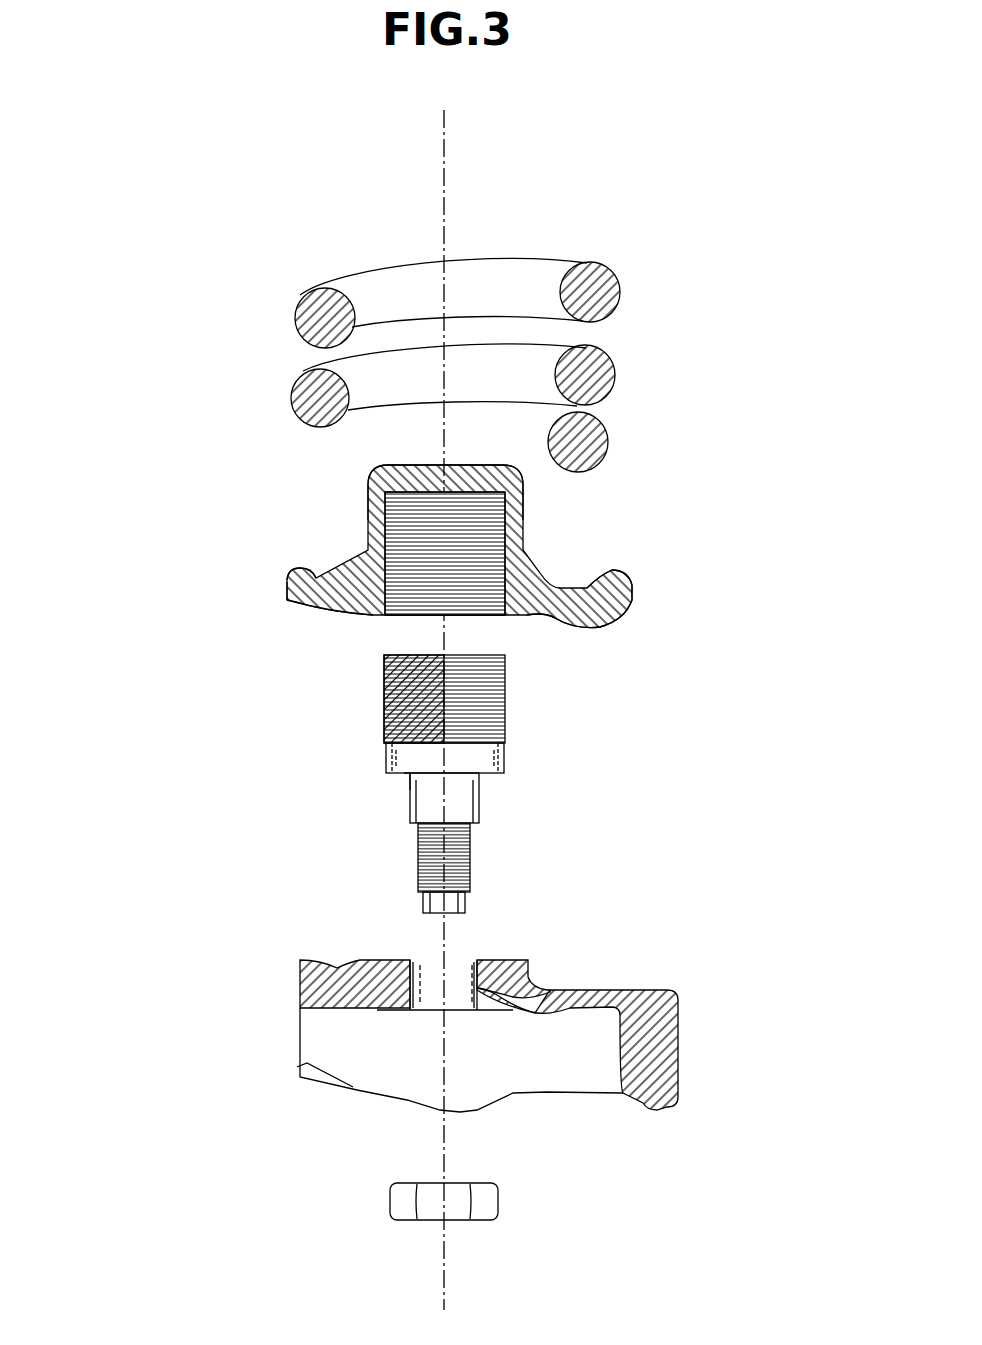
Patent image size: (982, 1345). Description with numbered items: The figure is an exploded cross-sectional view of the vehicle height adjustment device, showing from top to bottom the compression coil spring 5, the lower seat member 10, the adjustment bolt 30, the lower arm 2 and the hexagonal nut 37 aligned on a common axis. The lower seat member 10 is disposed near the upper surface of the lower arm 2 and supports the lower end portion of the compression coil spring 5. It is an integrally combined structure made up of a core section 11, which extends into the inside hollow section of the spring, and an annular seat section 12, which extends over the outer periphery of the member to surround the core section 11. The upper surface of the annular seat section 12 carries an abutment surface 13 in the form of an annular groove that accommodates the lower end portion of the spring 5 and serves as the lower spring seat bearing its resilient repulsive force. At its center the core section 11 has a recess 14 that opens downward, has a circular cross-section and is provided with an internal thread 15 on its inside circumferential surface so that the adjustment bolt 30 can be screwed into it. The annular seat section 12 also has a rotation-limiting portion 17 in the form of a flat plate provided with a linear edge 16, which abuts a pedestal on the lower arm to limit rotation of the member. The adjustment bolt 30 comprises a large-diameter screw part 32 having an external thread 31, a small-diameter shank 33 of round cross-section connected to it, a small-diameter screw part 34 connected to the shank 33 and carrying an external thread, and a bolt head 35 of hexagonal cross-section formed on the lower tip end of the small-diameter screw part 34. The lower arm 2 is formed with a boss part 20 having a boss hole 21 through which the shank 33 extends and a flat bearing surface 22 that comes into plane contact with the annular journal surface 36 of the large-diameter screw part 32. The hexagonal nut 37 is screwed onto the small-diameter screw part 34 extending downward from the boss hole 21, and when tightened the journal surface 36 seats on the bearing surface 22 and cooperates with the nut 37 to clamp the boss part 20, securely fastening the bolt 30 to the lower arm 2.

The lower arm 2 is at (658, 1038).
The compression coil spring 5 is at (295, 320).
The lower seat member 10 is at (419, 565).
The core section 11 is at (373, 512).
The annular seat section 12 is at (632, 578).
The abutment surface 13 is at (600, 580).
The recess 14 is at (445, 553).
The internal thread 15 is at (463, 595).
The linear edge 16 is at (288, 585).
The rotation-limiting portion 17 is at (317, 577).
The boss part 20 is at (565, 996).
The boss hole 21 is at (457, 1024).
The bearing surface 22 is at (505, 960).
The adjustment bolt 30 is at (412, 804).
The external thread 31 is at (507, 700).
The large-diameter screw part 32 is at (408, 757).
The small-diameter shank 33 is at (457, 795).
The small-diameter screw part 34 is at (467, 852).
The bolt head 35 is at (423, 898).
The annular journal surface 36 is at (403, 778).
The hexagonal nut 37 is at (403, 1207).